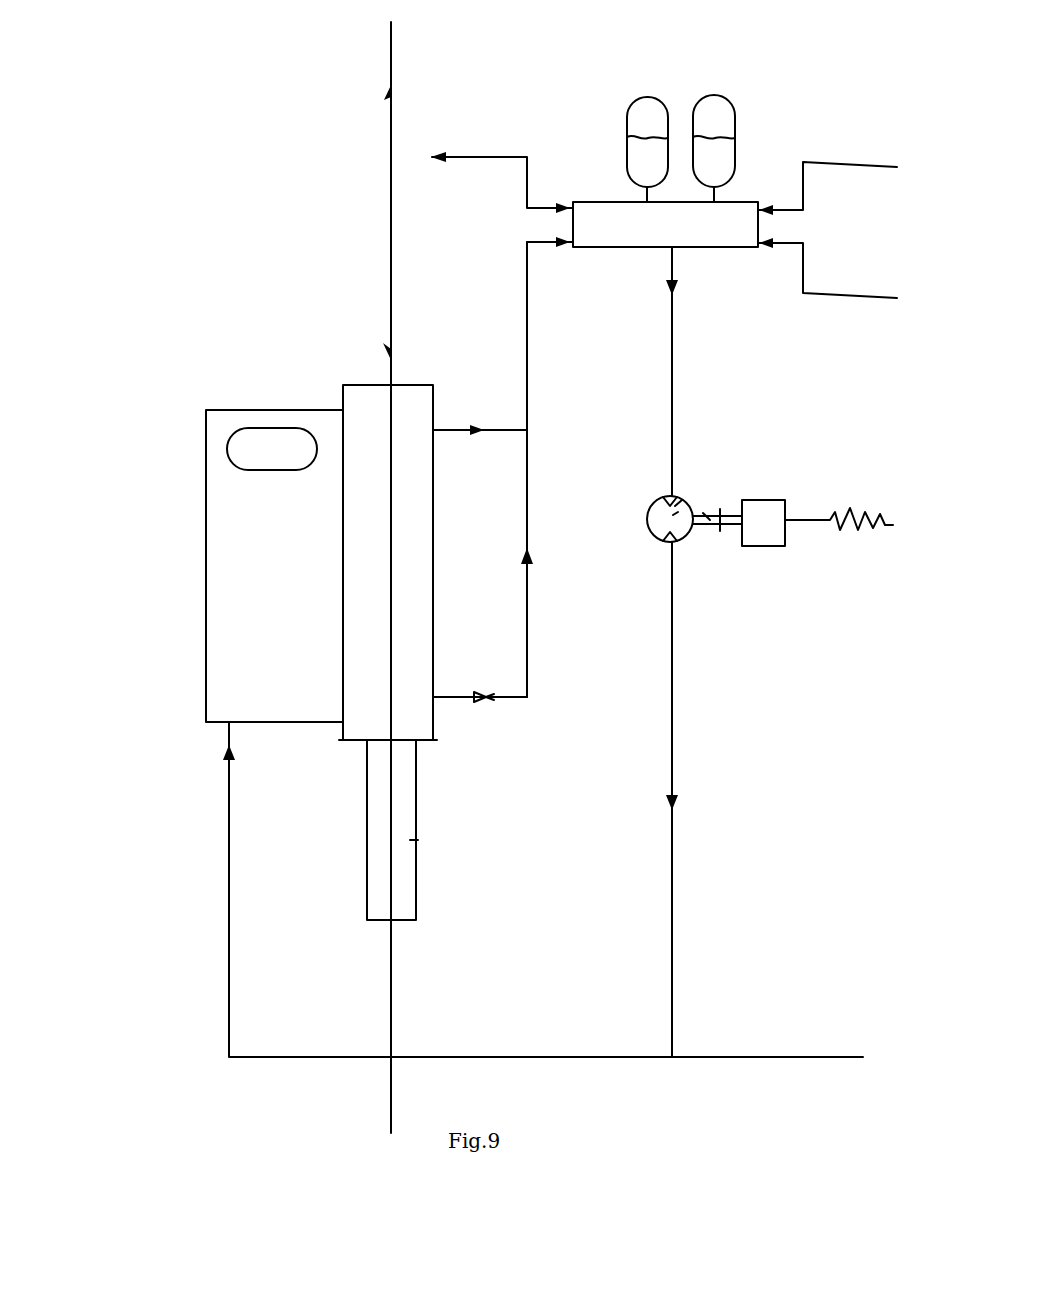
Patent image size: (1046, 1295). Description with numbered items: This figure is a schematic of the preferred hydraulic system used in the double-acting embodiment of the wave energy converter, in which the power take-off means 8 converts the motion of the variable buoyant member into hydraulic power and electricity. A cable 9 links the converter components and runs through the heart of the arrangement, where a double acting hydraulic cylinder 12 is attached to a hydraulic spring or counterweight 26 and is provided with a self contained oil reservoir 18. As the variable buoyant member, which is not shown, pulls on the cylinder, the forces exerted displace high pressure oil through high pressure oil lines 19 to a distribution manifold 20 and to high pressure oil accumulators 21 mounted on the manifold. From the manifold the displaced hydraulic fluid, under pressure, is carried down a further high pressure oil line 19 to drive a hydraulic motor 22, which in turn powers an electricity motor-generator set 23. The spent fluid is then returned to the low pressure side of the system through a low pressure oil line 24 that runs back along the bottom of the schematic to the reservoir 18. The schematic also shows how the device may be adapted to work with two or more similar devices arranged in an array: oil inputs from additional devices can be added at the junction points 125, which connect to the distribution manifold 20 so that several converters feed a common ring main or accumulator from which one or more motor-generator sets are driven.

The power take-off means 8 is at (90, 790).
The cable 9 is at (391, 72).
The double acting hydraulic cylinder 12 is at (433, 512).
The self contained oil reservoir 18 is at (206, 613).
The high pressure oil lines 19 is at (527, 520).
The distribution manifold 20 is at (707, 248).
The high pressure oil accumulators 21 is at (627, 120).
The hydraulic motor 22 is at (893, 457).
The electricity motor-generator set 23 is at (893, 603).
The low pressure oil line 24 is at (428, 1058).
The hydraulic spring or counterweight 26 is at (416, 897).
The junction points 125 is at (662, 206).